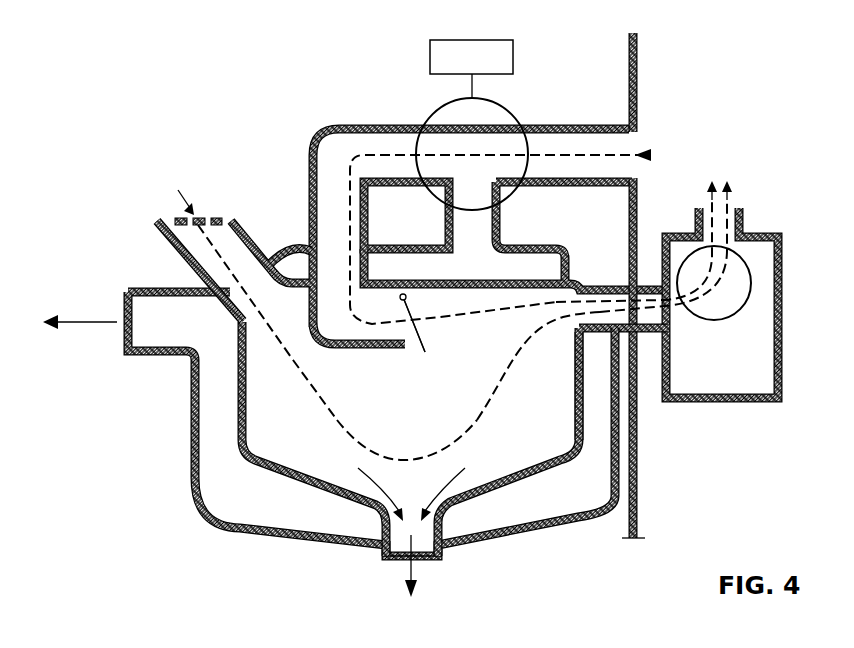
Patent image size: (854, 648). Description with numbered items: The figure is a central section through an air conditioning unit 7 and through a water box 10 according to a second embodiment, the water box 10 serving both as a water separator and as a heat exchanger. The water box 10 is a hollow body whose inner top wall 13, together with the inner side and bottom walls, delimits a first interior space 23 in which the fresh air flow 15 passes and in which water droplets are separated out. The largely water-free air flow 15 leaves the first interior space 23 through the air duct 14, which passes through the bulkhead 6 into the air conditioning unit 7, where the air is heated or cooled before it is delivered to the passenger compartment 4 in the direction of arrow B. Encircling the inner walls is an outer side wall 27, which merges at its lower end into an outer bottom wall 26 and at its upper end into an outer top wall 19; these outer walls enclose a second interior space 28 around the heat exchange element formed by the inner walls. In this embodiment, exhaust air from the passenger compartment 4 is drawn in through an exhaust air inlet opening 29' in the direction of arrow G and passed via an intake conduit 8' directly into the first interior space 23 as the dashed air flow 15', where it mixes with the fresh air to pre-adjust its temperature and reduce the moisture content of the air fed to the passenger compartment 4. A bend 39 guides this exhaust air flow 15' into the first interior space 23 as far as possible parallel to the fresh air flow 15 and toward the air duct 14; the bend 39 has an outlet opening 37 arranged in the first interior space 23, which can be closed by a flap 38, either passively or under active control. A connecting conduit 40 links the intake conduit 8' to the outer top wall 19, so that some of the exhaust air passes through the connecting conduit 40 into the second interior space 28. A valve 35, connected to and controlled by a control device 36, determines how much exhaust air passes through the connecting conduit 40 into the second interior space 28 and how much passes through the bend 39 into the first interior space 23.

The passenger compartment 4 is at (803, 126).
The bulkhead 6 is at (635, 102).
The air conditioning unit 7 is at (745, 428).
The intake conduit 8' is at (628, 277).
The water box 10 is at (180, 468).
The inner top wall 13 is at (503, 286).
The air duct 14 is at (642, 313).
The air flow 15 is at (371, 468).
The air flow 15' is at (471, 180).
The outer top wall 19 is at (530, 248).
The first interior space 23 is at (327, 455).
The outer bottom wall 26 is at (492, 533).
The outer side wall 27 is at (193, 488).
The second interior space 28 is at (280, 512).
The exhaust air inlet opening 29' is at (708, 87).
The valve 35 is at (427, 115).
The control device 36 is at (478, 60).
The outlet opening 37 is at (398, 300).
The flap 38 is at (425, 352).
The bend 39 is at (400, 298).
The connecting conduit 40 is at (453, 215).
The arrow G is at (648, 155).
The arrow B is at (722, 200).